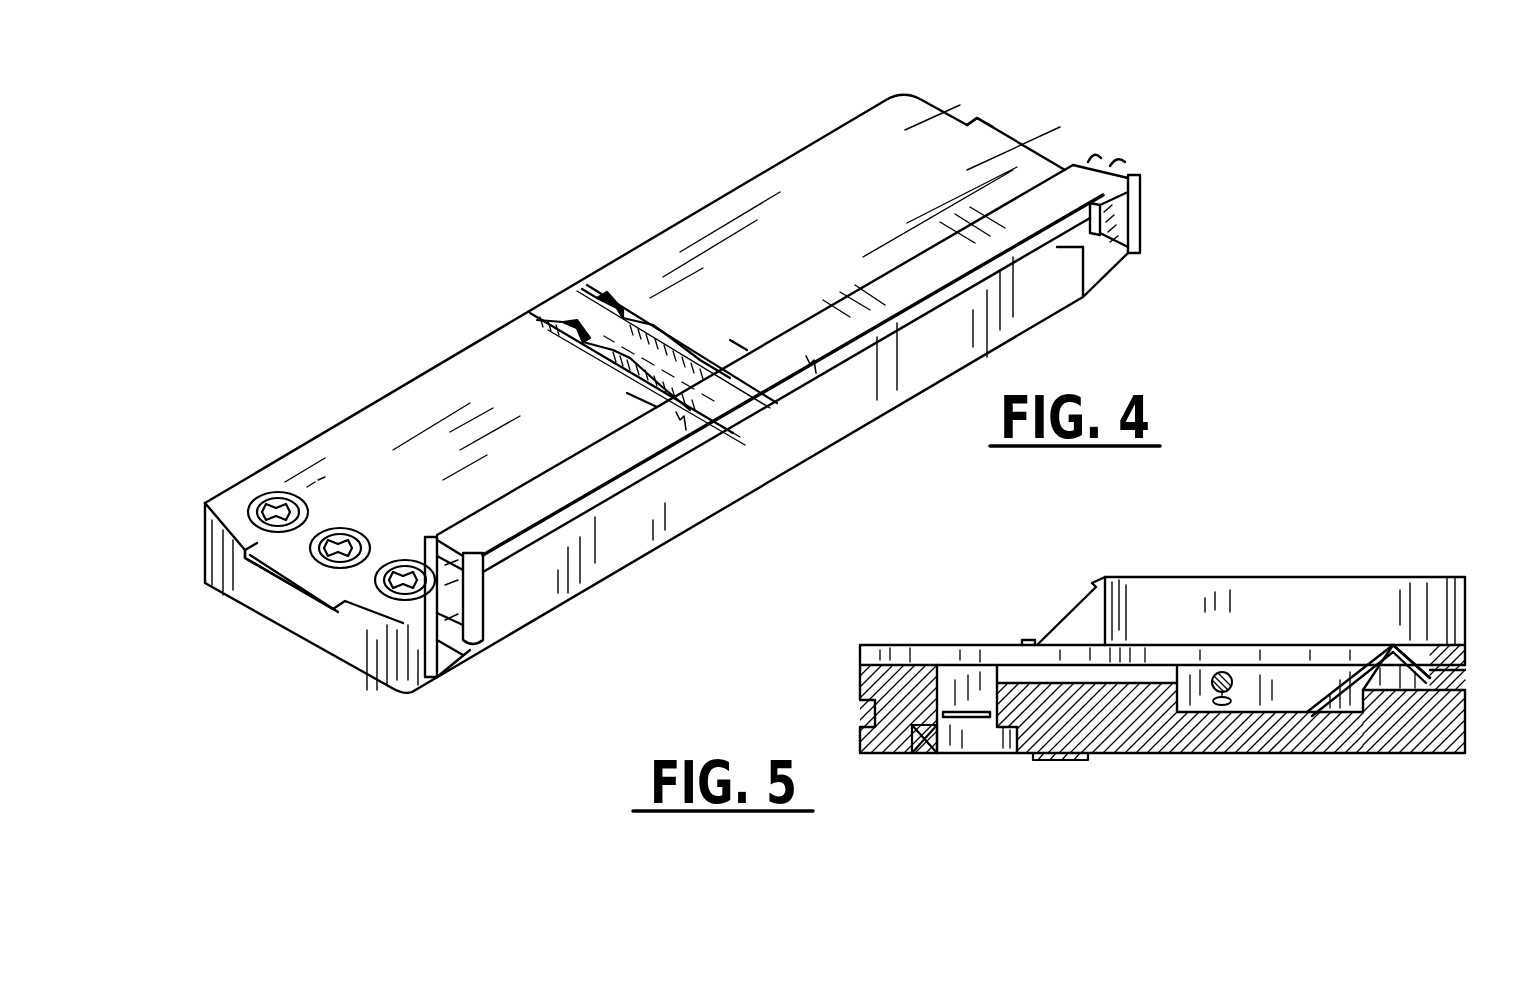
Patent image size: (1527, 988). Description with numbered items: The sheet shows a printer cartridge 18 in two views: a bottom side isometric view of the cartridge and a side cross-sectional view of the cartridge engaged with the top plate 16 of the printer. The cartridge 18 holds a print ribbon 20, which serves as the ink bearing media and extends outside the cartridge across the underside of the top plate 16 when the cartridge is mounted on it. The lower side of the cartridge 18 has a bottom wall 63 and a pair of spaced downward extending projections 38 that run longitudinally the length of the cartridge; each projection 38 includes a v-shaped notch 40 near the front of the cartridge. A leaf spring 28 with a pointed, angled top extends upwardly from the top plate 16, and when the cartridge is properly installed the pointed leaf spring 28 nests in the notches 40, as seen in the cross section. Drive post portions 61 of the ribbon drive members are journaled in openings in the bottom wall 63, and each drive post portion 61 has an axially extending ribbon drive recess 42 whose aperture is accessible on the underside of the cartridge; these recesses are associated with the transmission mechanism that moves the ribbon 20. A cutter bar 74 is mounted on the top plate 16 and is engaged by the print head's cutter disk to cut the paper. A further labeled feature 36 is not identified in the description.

In FIG. 5, the top plate 16 is at (1245, 732).
In FIG. 4, the printer cartridge 18 is at (391, 357).
In FIG. 5, the printer cartridge 18 is at (1312, 625).
In FIG. 5, the print ribbon 20 is at (1060, 762).
In FIG. 5, the leaf spring 28 is at (1468, 648).
In FIG. 4, the locating tab 36 is at (995, 125).
In FIG. 4, the downward extending projections 38 is at (690, 347).
In FIG. 4, the v-shaped notch 40 is at (627, 292).
In FIG. 5, the v-shaped notch 40 is at (1405, 648).
In FIG. 4, the ribbon drive recesses 42 is at (343, 545).
In FIG. 4, the drive post portions 61 is at (274, 505).
In FIG. 4, the bottom wall 63 is at (545, 375).
In FIG. 5, the cutter bar 74 is at (928, 756).